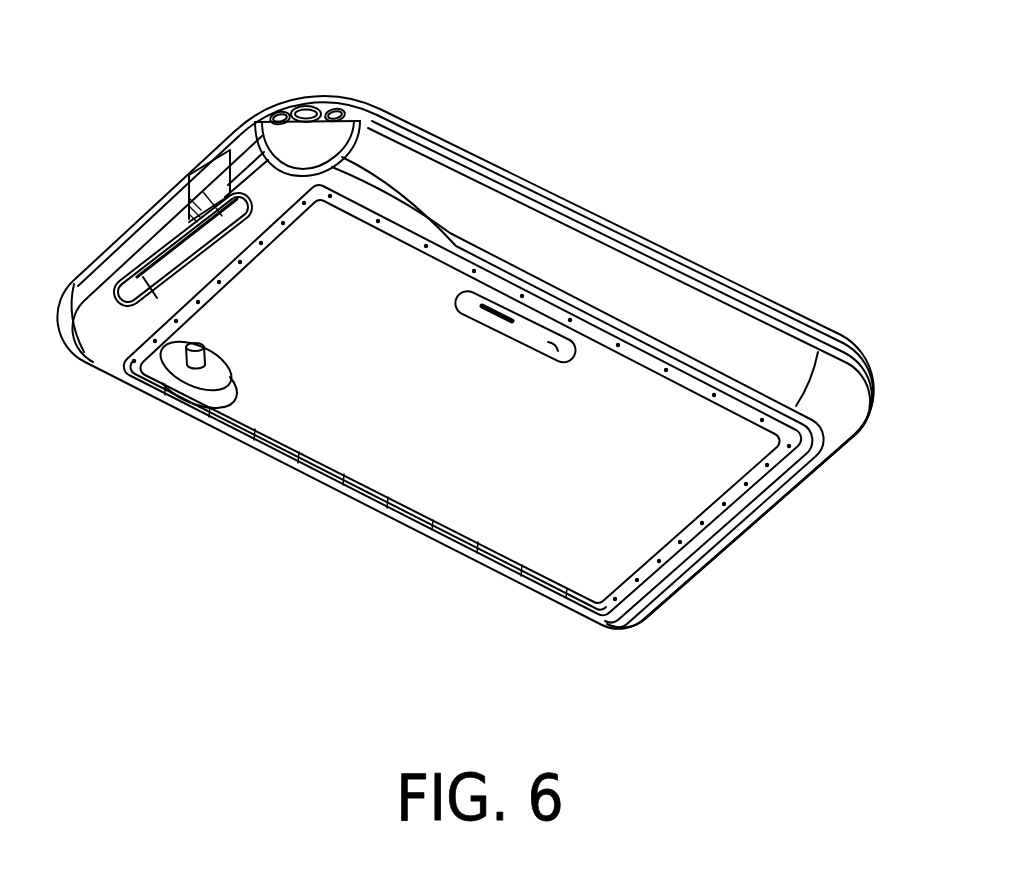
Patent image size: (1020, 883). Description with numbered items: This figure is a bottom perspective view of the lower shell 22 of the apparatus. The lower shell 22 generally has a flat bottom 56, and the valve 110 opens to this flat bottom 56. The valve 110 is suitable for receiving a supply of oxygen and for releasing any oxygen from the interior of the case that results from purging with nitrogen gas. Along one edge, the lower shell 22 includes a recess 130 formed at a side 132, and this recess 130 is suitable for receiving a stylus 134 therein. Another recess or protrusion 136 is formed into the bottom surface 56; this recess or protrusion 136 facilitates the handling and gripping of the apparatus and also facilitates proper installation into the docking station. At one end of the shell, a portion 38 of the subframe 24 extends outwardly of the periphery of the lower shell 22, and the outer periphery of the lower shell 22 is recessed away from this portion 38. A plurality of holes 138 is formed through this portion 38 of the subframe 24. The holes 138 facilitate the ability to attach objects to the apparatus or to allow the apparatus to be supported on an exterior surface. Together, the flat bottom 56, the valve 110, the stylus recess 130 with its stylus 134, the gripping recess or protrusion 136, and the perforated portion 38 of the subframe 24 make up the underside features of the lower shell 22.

The lower shell 22 is at (727, 326).
The subframe 24 is at (543, 188).
The portion of the subframe 38 is at (327, 93).
The flat bottom 56 is at (517, 461).
The valve 110 is at (217, 362).
The recess 130 is at (195, 188).
The side 132 is at (138, 254).
The stylus 134 is at (207, 220).
The recess or protrusion 136 is at (558, 352).
The holes 138 is at (304, 106).